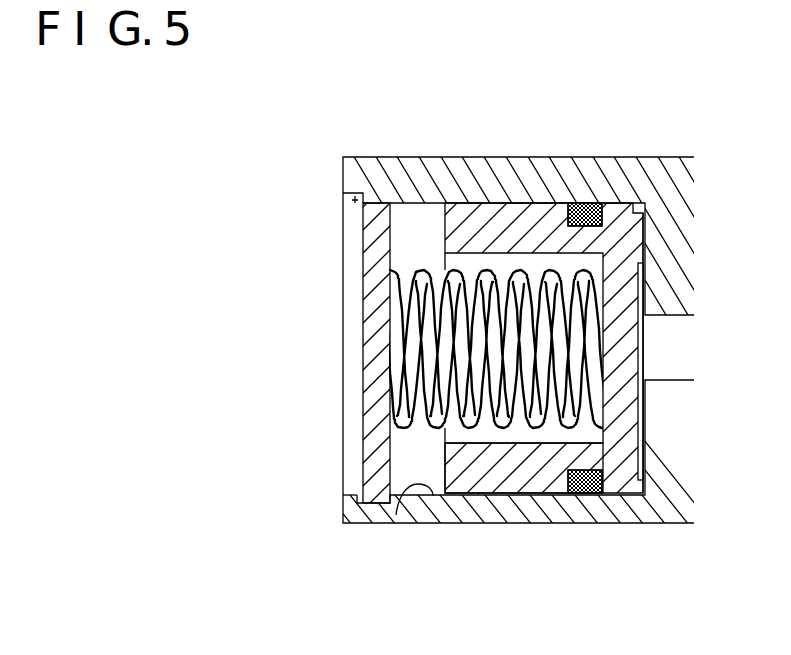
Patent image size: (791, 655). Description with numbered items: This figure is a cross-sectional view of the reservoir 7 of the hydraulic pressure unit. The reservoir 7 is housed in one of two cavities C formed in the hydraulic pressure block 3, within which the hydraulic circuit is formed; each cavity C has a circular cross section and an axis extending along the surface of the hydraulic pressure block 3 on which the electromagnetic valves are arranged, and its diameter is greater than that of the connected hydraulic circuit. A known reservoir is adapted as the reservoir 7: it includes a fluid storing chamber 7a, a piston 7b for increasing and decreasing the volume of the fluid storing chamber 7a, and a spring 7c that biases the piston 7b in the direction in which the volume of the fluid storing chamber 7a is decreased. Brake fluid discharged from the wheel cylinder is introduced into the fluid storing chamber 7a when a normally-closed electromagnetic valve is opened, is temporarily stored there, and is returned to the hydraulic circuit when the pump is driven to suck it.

The hydraulic pressure block 3 is at (602, 180).
The reservoir 7 is at (475, 528).
The fluid storing chamber 7a is at (645, 350).
The piston 7b is at (542, 477).
The spring 7c is at (392, 367).
The cavity C is at (396, 515).